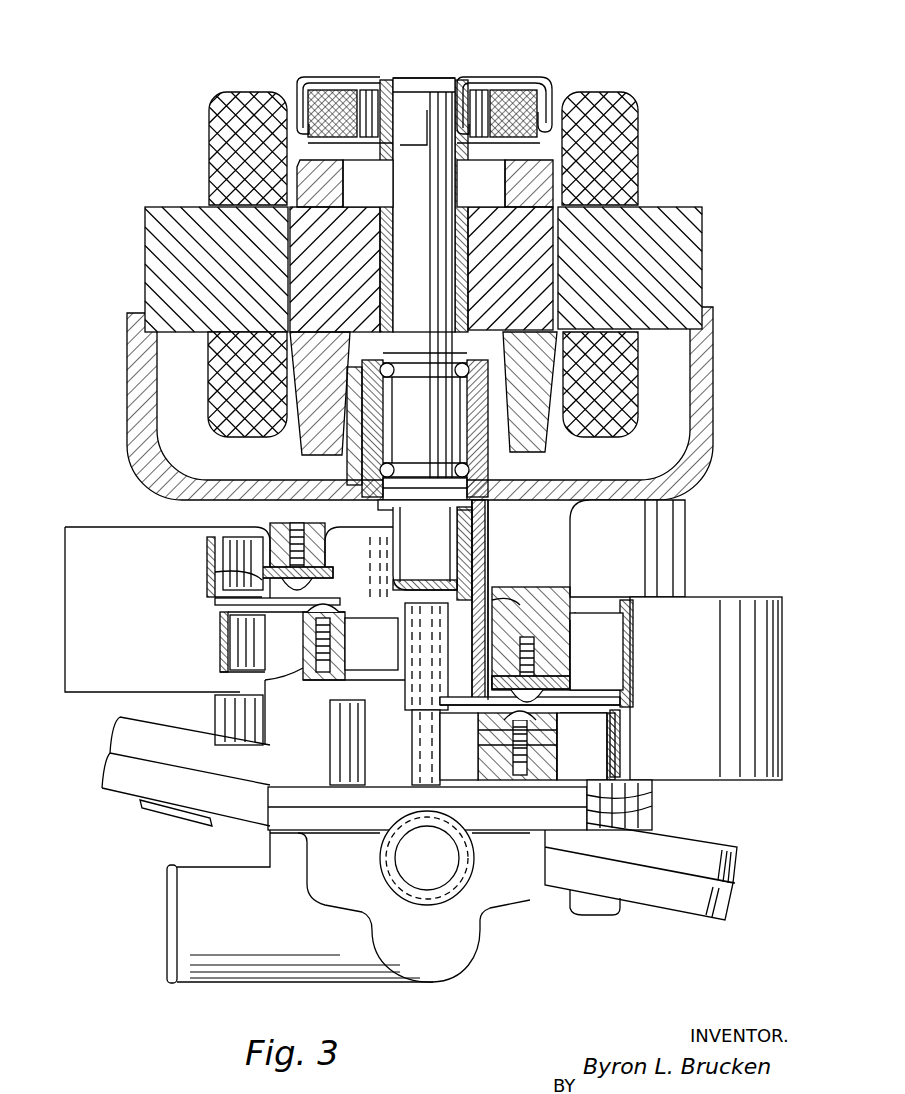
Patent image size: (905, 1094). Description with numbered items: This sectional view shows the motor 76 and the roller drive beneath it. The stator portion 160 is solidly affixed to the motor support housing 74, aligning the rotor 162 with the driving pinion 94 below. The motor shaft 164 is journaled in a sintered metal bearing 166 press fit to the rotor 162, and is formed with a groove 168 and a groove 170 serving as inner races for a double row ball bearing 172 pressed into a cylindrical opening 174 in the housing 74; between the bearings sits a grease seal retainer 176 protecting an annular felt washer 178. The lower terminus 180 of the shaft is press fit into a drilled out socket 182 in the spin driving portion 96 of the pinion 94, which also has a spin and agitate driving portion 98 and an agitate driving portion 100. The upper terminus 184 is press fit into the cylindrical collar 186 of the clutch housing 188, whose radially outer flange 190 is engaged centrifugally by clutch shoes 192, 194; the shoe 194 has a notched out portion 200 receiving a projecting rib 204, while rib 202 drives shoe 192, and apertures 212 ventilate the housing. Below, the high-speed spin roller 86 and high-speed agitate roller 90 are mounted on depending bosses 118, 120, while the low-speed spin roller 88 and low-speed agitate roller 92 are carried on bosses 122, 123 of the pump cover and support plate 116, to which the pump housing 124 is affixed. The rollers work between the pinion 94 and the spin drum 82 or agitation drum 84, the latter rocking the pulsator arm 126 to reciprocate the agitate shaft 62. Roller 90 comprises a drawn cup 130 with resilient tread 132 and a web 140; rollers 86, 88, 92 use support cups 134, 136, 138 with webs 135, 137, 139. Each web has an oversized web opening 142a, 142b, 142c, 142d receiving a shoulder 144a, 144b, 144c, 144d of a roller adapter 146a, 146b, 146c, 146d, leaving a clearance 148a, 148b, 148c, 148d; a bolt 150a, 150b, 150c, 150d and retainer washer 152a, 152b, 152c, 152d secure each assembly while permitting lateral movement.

The agitate shaft 62 is at (212, 720).
The motor support housing 74 is at (712, 446).
The motor 76 is at (706, 226).
The spin drum 82 is at (88, 680).
The agitation drum 84 is at (770, 770).
The high-speed spin roller 86 is at (207, 588).
The low-speed spin roller 88 is at (222, 655).
The high-speed agitate roller 90 is at (634, 688).
The low-speed agitate roller 92 is at (620, 760).
The driving pinion 94 is at (408, 790).
The spin driving portion 96 is at (490, 562).
The spin and agitate driving portion 98 is at (449, 645).
The agitate driving portion 100 is at (412, 735).
The pump cover and support plate 116 is at (652, 812).
The depending boss 118 is at (262, 522).
The depending boss 120 is at (572, 575).
The boss 122 is at (375, 698).
The boss 123 is at (652, 792).
The pump housing 124 is at (478, 932).
The pulsator arm 126 is at (725, 915).
The drawn cup 130 is at (626, 660).
The resilient tread 132 is at (634, 633).
The drawn cup-like support 134 is at (207, 548).
The web 135 is at (243, 563).
The support cup 136 is at (242, 712).
The web 137 is at (371, 644).
The support cup 138 is at (586, 746).
The web 139 is at (458, 746).
The web 140 is at (590, 660).
The web opening 142a is at (633, 612).
The web opening 142b is at (322, 570).
The web opening 142c is at (168, 642).
The web opening 142d is at (548, 782).
The shoulder 144a is at (526, 650).
The shoulder 144b is at (297, 540).
The shoulder 144c is at (318, 690).
The shoulder 144d is at (515, 782).
The roller adapter 146a is at (620, 703).
The roller adapter 146b is at (228, 601).
The roller adapter 146c is at (232, 628).
The roller adapter 146d is at (440, 742).
The clearance 148a is at (570, 625).
The clearance 148b is at (247, 642).
The clearance 148c is at (238, 709).
The clearance 148d is at (490, 782).
The bolt 150a is at (520, 595).
The bolt 150b is at (290, 560).
The bolt 150c is at (364, 729).
The retainer bolt 150d is at (522, 782).
The retainer washer 152a is at (505, 678).
The retainer washer 152b is at (210, 572).
The retainer washer 152c is at (330, 718).
The retainer washer 152d is at (620, 728).
The stator portion 160 is at (603, 275).
The rotor 162 is at (492, 275).
The motor shaft 164 is at (400, 279).
The sintered metal bearing 166 is at (388, 218).
The groove 168 is at (404, 376).
The groove 170 is at (425, 514).
The double row ball bearing 172 is at (485, 490).
The cylindrical opening 174 is at (352, 372).
The grease seal retainer 176 is at (500, 345).
The annular felt washer 178 is at (408, 350).
The lower terminus 180 is at (413, 553).
The drilled out socket 182 is at (457, 541).
The upper terminus 184 is at (425, 92).
The cylindrical collar 186 is at (388, 92).
The clutch housing 188 is at (303, 80).
The radially outer flange 190 is at (555, 95).
The centrifugal clutch shoe 192 is at (330, 95).
The centrifugal clutch shoe 194 is at (530, 92).
The notched out portion 200 is at (393, 145).
The projecting rib 202 is at (338, 162).
The projecting rib 204 is at (505, 165).
The aperture 212 is at (370, 80).